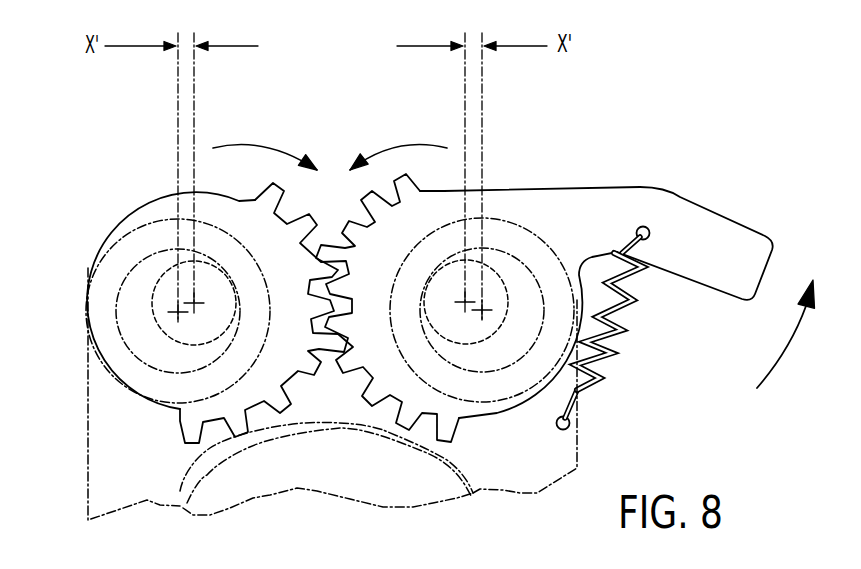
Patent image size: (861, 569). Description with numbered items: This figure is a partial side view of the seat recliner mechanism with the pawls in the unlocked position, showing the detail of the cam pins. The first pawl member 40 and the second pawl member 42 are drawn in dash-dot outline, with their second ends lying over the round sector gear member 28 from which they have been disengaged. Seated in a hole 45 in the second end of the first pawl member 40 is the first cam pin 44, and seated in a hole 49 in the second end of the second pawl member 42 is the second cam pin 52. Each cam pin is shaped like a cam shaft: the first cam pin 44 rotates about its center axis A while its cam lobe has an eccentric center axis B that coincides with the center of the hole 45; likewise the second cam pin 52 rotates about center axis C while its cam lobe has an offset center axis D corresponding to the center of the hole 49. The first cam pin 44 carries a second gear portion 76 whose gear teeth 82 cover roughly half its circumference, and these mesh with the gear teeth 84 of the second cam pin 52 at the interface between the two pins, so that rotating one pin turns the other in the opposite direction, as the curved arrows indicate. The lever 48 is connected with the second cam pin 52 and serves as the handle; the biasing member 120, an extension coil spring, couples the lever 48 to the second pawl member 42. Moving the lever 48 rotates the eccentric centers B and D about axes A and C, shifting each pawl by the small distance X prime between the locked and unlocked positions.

The sector gear member 28 is at (252, 501).
The first pawl member 40 is at (80, 458).
The second pawl member 42 is at (508, 501).
The first cam pin 44 is at (189, 286).
The hole 45 is at (116, 377).
The lever 48 is at (742, 226).
The hole 49 is at (526, 267).
The second cam pin 52 is at (596, 270).
The second gear portion 76 is at (155, 194).
The gear teeth 82 is at (283, 250).
The gear teeth 84 is at (380, 247).
The biasing member 120 is at (619, 331).
The center axis A is at (194, 303).
The cam lobe center axis B is at (178, 312).
The center axis C is at (465, 303).
The second cam lobe center axis D is at (483, 311).